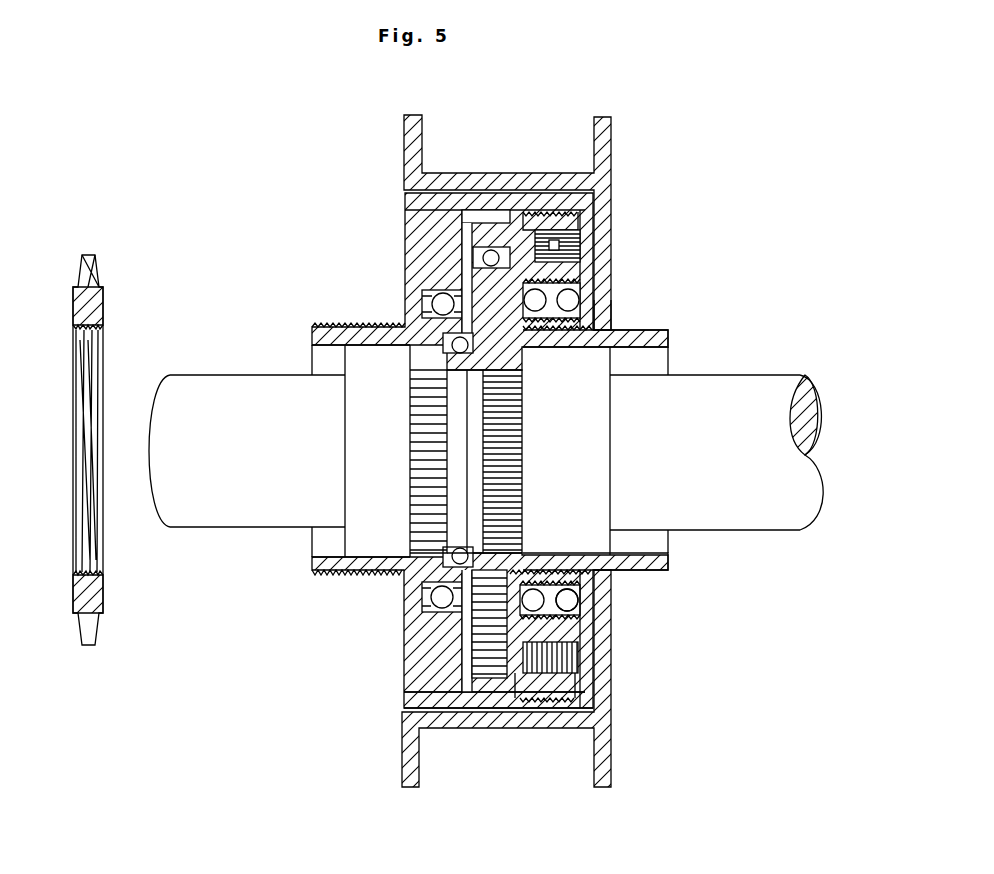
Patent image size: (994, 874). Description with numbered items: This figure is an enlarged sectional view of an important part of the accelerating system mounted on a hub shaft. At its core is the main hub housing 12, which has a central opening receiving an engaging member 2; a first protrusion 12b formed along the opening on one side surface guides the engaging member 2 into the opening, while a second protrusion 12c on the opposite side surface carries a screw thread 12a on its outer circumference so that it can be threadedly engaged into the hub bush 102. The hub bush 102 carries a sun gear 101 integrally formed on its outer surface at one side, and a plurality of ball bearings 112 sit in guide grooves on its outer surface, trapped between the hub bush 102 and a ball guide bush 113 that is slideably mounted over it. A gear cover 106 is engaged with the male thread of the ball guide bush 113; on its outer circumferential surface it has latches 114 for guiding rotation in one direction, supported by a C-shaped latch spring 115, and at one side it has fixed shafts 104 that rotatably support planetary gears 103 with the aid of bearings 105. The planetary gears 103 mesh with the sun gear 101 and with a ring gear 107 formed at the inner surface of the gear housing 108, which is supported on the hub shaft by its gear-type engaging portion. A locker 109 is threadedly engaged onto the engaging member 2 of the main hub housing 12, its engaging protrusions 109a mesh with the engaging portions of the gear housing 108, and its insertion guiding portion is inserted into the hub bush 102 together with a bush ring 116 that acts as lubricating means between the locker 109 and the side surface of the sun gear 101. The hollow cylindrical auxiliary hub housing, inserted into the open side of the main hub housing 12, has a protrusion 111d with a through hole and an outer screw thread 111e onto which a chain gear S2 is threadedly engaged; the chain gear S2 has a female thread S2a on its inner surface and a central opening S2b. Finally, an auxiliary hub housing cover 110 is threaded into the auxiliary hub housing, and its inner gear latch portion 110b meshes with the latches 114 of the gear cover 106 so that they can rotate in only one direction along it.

The engaging member 2 is at (215, 490).
The main hub housing 12 is at (606, 142).
The screw thread 12a is at (614, 318).
The first protrusion 12b is at (655, 330).
The second protrusion 12c is at (563, 568).
The sun gear 101 is at (515, 597).
The hub bush 102 is at (590, 607).
The planetary gears 103 is at (455, 212).
The fixed shafts 104 is at (455, 290).
The bearings 105 is at (478, 245).
The gear cover 106 is at (558, 683).
The ring gear 107 is at (490, 642).
The gear housing 108 is at (455, 690).
The locker 109 is at (452, 482).
The engaging protrusions 109a is at (410, 450).
The auxiliary hub housing cover 110 is at (540, 703).
The gear latch portion 110b is at (582, 243).
The protrusion 111d is at (330, 340).
The screw thread 111e is at (340, 323).
The ball bearings 112 is at (572, 605).
The ball guide bush 113 is at (552, 618).
The latches 114 is at (592, 225).
The latch spring 115 is at (575, 255).
The bush ring 116 is at (473, 515).
The chain gear S2 is at (80, 287).
The female thread S2a is at (88, 445).
The central opening S2b is at (85, 328).